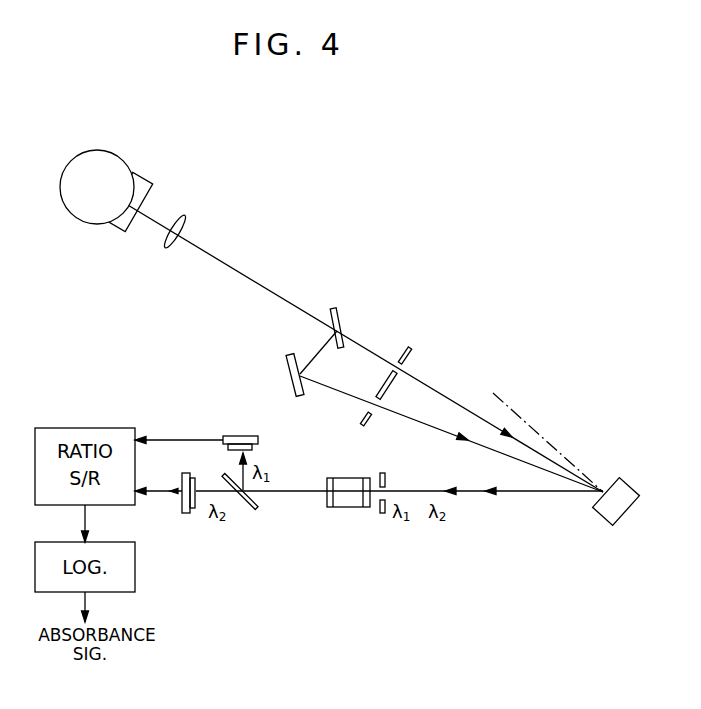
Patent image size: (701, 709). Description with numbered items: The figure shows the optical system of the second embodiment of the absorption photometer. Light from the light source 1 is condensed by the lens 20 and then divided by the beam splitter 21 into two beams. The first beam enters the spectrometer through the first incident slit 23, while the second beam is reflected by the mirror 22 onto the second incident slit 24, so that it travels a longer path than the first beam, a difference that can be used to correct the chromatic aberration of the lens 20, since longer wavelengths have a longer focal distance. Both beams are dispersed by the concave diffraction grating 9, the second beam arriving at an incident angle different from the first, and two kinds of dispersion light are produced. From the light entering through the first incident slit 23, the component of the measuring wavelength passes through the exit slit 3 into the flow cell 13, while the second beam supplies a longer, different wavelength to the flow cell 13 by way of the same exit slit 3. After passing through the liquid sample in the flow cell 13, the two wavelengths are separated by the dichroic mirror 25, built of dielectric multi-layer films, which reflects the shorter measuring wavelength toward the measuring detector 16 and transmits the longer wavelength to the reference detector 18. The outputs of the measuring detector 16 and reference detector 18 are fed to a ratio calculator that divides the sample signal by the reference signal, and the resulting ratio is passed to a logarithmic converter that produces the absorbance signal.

The light source 1 is at (78, 218).
The lens 20 is at (167, 249).
The beam splitter 21 is at (340, 313).
The mirror 22 is at (288, 358).
The first incident slit 23 is at (410, 362).
The second incident slit 24 is at (372, 414).
The concave diffraction grating 9 is at (605, 517).
The exit slit 3 is at (387, 478).
The flow cell 13 is at (350, 507).
The dichroic mirror 25 is at (243, 505).
The measuring detector 16 is at (230, 435).
The reference detector 18 is at (182, 507).